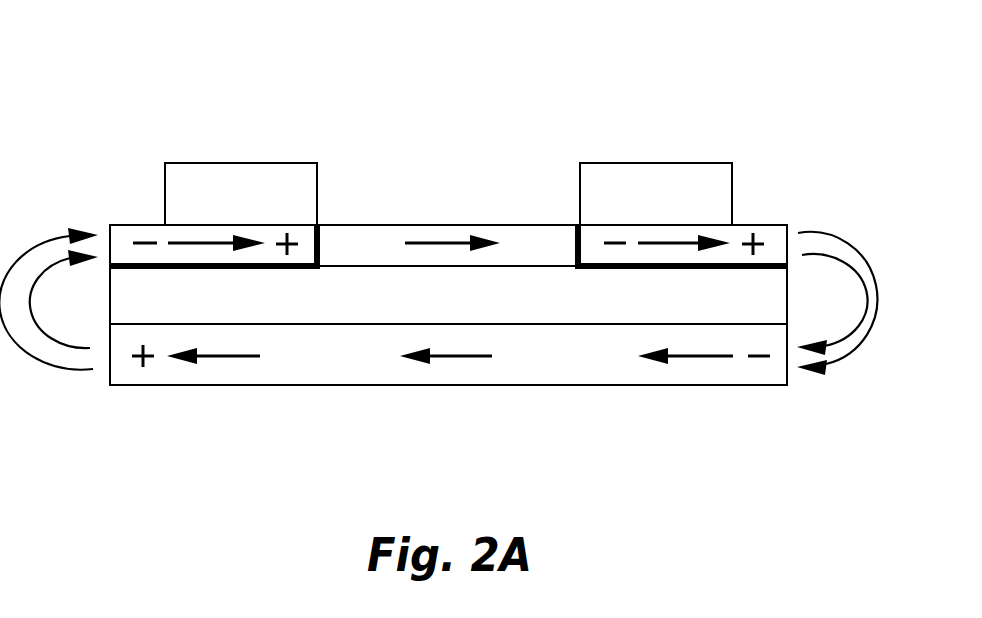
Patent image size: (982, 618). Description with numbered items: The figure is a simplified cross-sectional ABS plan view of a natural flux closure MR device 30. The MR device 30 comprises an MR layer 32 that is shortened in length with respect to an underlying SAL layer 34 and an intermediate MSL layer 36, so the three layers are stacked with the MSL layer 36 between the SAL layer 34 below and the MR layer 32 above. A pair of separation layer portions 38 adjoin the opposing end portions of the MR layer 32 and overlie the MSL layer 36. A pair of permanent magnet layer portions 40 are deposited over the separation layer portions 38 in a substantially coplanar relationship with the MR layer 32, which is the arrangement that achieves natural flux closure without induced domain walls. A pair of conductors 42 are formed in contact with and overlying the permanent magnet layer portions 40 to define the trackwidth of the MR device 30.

The natural flux closure MR device 30 is at (228, 520).
The MR layer 32 is at (365, 225).
The SAL layer 34 is at (503, 385).
The MSL layer 36 is at (786, 301).
The separation layer portions 38 is at (297, 268).
The permanent magnet layer portions 40 is at (137, 227).
The conductors 42 is at (238, 163).